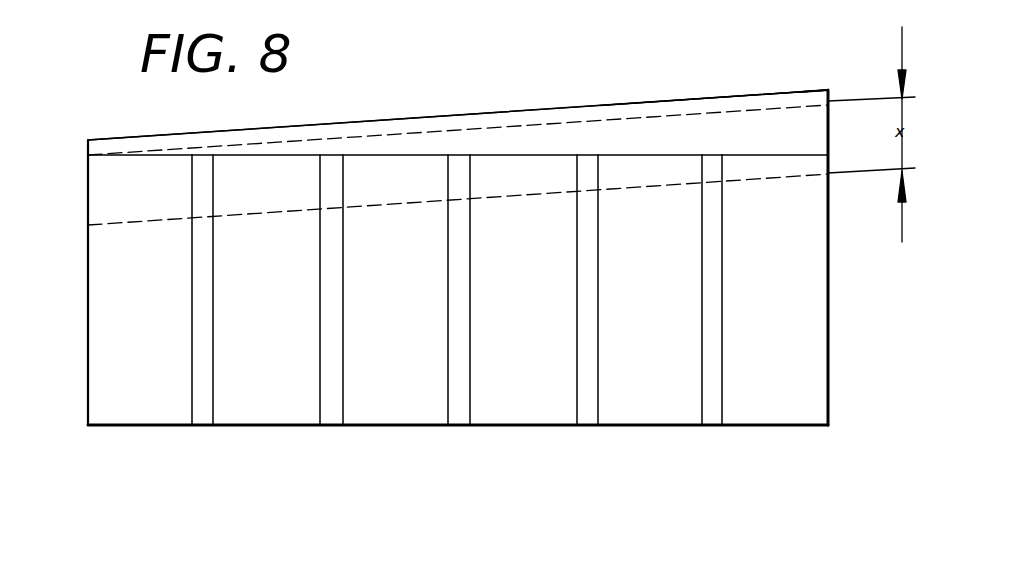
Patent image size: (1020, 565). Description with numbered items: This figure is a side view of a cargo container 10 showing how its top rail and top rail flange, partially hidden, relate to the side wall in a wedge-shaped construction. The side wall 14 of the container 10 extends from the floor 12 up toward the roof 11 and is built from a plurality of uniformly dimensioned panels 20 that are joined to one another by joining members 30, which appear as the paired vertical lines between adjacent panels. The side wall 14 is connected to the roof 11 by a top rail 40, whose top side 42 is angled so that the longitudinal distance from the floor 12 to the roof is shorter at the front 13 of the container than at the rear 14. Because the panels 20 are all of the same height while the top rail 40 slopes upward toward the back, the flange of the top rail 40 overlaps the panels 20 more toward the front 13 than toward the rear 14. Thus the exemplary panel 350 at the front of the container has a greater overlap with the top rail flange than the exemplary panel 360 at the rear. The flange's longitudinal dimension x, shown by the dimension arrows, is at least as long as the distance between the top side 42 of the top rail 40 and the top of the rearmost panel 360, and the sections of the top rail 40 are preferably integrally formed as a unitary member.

The cargo container 10 is at (441, 95).
The roof 11 is at (598, 107).
The floor 12 is at (292, 432).
The front 13 is at (86, 377).
The side wall 14 is at (832, 303).
The panel 20 is at (280, 361).
The joining member 30 is at (207, 398).
The top rail 40 is at (834, 97).
The top side 42 is at (737, 97).
The panel 350 is at (125, 253).
The panel 360 is at (792, 375).